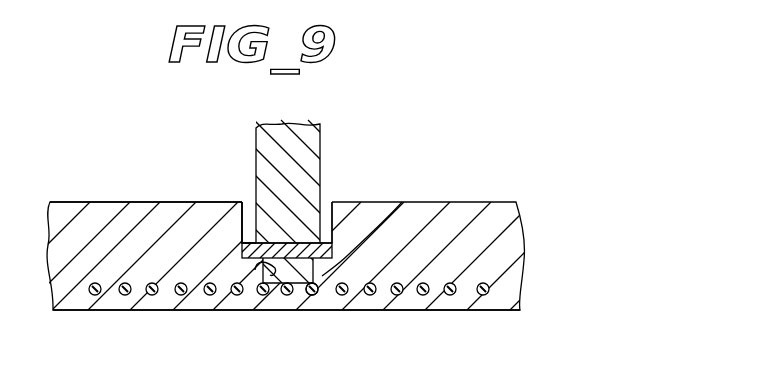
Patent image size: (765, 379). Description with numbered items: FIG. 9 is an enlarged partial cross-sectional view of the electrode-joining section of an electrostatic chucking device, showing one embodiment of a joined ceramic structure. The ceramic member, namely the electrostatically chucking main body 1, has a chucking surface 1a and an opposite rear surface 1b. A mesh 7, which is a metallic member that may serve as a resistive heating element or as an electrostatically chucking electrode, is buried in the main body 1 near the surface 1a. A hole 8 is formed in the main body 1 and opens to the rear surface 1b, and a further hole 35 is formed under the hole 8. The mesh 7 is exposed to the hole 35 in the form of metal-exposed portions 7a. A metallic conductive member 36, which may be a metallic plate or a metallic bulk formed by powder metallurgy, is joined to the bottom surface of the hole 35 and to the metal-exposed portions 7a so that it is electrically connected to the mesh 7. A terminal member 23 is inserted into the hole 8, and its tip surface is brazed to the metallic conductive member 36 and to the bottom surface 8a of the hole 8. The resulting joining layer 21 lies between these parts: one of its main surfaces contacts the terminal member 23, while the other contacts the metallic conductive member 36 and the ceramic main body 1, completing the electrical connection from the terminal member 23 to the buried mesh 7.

The electrostatically chucking main body 1 is at (500, 221).
The surface of the main body 1a is at (152, 310).
The rear surface of the main body 1b is at (122, 201).
The mesh 7 is at (371, 296).
The metal-exposed portions 7a is at (311, 296).
The hole 8 is at (246, 205).
The bottom surface of the hole 8a is at (322, 203).
The joining layer 21 is at (243, 244).
The terminal member 23 is at (320, 146).
The hole 35 is at (263, 272).
The metallic conductive member 36 is at (402, 202).